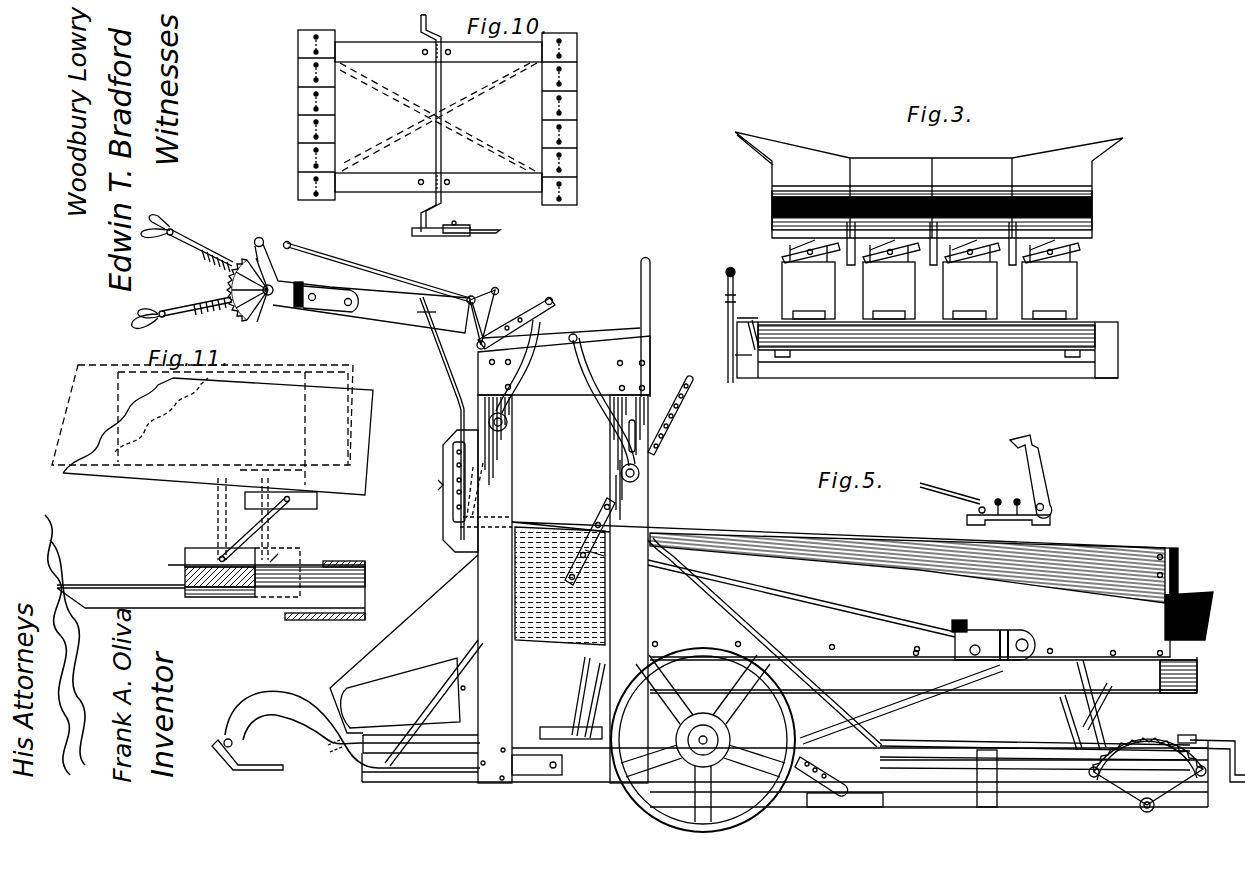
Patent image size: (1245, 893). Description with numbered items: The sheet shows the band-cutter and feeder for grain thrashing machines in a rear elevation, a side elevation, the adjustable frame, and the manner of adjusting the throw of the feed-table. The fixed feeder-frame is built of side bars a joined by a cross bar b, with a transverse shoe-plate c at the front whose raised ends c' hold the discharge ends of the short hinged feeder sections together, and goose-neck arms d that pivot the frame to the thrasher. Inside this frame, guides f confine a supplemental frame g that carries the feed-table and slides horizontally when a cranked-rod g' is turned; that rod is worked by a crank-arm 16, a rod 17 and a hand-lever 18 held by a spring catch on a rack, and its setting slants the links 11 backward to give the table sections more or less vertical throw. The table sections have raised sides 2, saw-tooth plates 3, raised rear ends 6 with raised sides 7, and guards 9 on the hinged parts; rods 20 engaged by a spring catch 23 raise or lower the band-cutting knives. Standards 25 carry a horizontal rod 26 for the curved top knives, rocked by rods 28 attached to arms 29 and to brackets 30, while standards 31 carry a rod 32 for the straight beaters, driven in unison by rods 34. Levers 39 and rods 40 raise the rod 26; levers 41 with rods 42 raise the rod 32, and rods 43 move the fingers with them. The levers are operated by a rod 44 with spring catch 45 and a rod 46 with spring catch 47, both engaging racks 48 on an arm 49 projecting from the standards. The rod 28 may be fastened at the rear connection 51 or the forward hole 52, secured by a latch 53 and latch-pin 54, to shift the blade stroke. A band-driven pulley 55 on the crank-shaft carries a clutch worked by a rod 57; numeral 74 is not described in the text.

In FIG. 3, the raised sides 2 is at (917, 185).
In FIG. 11, the raised sides 2 is at (212, 481).
In FIG. 5, the raised sides 2 is at (854, 607).
In FIG. 3, the raised teeth 3 is at (864, 267).
In FIG. 3, the raised rear ends 6 is at (932, 198).
In FIG. 5, the raised rear ends 6 is at (1193, 597).
In FIG. 5, the raised sides of rear ends 7 is at (1183, 572).
In FIG. 10, the raised guards 9 is at (437, 117).
In FIG. 5, the raised guards 9 is at (406, 660).
In FIG. 3, the links 11 is at (929, 282).
In FIG. 11, the links 11 is at (255, 529).
In FIG. 5, the links 11 is at (827, 703).
In FIG. 10, the crank-arm 16 is at (441, 133).
In FIG. 5, the crank-arm 16 is at (819, 776).
In FIG. 10, the rod 17 is at (471, 221).
In FIG. 5, the rod 17 is at (1035, 759).
In FIG. 3, the hand-lever 18 is at (731, 326).
In FIG. 5, the hand-lever 18 is at (1121, 736).
In FIG. 3, the rods 20 is at (931, 243).
In FIG. 3, the spring catch 23 is at (932, 268).
In FIG. 5, the standards 25 is at (629, 589).
In FIG. 5, the horizontal rod 26 is at (640, 473).
In FIG. 5, the rods 28 is at (814, 608).
In FIG. 5, the arms 29 is at (581, 541).
In FIG. 5, the brackets 30 is at (1005, 493).
In FIG. 5, the standards 31 is at (495, 589).
In FIG. 5, the horizontal rod 32 is at (508, 425).
In FIG. 5, the rods 34 is at (555, 424).
In FIG. 5, the levers 39 is at (564, 358).
In FIG. 5, the rods 40 is at (604, 402).
In FIG. 5, the levers 41 is at (516, 322).
In FIG. 5, the rods 42 is at (522, 366).
In FIG. 5, the rods 43 is at (485, 340).
In FIG. 5, the rod 44 is at (380, 273).
In FIG. 5, the spring catch 45 is at (187, 243).
In FIG. 5, the rod 46 is at (363, 286).
In FIG. 5, the spring catch 47 is at (182, 312).
In FIG. 5, the racks 48 is at (239, 290).
In FIG. 5, the arm 49 is at (335, 308).
In FIG. 5, the rod connection 51 is at (1008, 525).
In FIG. 5, the forward hole 52 is at (978, 508).
In FIG. 5, the latch 53 is at (945, 615).
In FIG. 5, the latch-pin 54 is at (985, 645).
In FIG. 5, the band-driven pulley 55 is at (699, 740).
In FIG. 5, the rod 57 is at (1062, 752).
In FIG. 5, the rod 74 is at (901, 704).
In FIG. 3, the side bars a is at (925, 352).
In FIG. 11, the side bars a is at (219, 590).
In FIG. 5, the side bars a is at (785, 746).
In FIG. 5, the pin a' is at (222, 728).
In FIG. 3, the cross bar b is at (927, 350).
In FIG. 11, the cross bar b is at (325, 590).
In FIG. 5, the shoe-plate c is at (332, 761).
In FIG. 5, the raised ends c' is at (400, 693).
In FIG. 5, the arms d is at (352, 729).
In FIG. 3, the ways or guides f is at (927, 360).
In FIG. 11, the ways or guides f is at (277, 558).
In FIG. 3, the supplemental frame g is at (926, 336).
In FIG. 11, the supplemental frame g is at (173, 572).
In FIG. 5, the cranked-rod g' is at (845, 788).